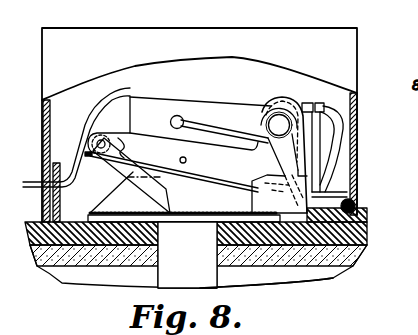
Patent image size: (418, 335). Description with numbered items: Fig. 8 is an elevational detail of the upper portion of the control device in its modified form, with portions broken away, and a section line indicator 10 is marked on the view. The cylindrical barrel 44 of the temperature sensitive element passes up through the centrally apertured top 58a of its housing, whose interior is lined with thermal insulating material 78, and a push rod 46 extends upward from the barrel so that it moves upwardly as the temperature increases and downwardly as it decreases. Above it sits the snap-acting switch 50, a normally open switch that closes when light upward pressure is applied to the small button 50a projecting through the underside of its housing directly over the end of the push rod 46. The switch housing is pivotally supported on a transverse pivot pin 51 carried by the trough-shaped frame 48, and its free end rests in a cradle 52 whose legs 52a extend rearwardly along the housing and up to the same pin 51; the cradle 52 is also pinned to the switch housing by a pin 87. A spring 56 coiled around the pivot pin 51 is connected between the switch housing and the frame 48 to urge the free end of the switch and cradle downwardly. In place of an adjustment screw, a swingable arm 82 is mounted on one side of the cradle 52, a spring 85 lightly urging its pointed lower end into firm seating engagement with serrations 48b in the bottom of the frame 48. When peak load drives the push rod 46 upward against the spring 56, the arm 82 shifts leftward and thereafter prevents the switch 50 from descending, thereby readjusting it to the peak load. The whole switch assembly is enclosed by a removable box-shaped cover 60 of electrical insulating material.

The removable box-shaped cover 60 is at (96, 35).
The snap-acting switch 50 is at (205, 110).
The spring 56 is at (241, 143).
The transverse pivot pin 51 is at (295, 100).
The cradle 52 is at (121, 138).
The spring 85 is at (125, 150).
The section line indicator 10 is at (175, 153).
The pin 87 is at (186, 159).
The button 50a is at (262, 184).
The swingable arm 82 is at (134, 184).
The push rod 46 is at (206, 213).
The legs 52a is at (279, 191).
The trough-shaped frame 48 is at (105, 256).
The serrations 48b is at (244, 255).
The cylindrical barrel 44 is at (207, 269).
The top 58a is at (362, 222).
The thermal insulating material 78 is at (340, 260).